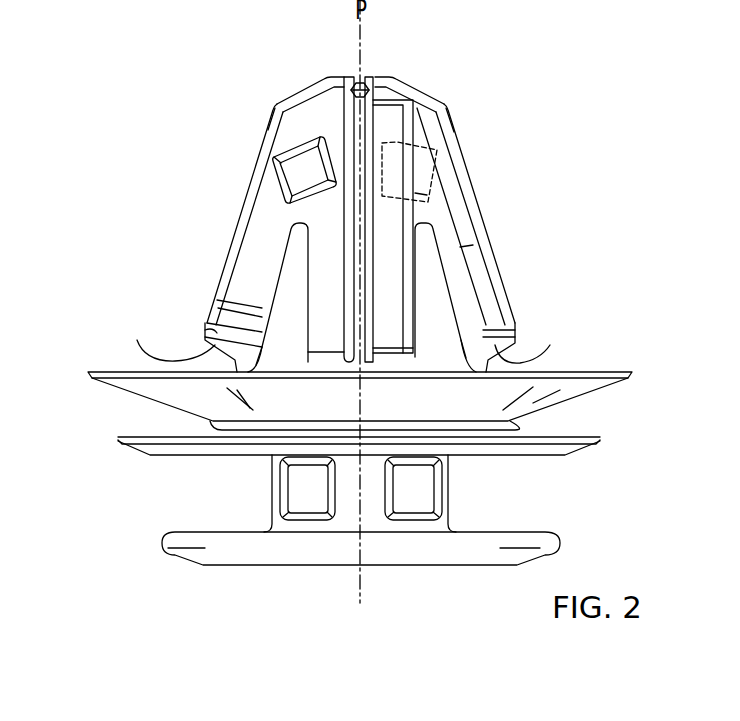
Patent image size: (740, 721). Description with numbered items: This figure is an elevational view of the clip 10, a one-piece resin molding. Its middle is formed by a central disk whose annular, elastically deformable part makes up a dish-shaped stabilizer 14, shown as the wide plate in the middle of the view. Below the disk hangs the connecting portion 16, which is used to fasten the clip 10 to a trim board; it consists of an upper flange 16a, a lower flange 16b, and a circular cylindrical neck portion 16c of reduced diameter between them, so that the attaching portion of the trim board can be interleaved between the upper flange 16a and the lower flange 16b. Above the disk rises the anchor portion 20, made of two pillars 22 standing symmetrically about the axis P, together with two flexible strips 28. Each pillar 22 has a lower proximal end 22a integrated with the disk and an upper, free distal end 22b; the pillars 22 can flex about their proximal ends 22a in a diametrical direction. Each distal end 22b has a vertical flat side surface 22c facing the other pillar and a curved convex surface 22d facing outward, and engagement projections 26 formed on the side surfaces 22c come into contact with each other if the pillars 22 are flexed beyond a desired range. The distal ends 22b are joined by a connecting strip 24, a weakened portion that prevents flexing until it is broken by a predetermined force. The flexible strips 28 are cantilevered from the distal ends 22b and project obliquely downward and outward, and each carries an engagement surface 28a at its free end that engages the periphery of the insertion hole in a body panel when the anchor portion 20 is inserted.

The clip 10 is at (152, 163).
The dish-shaped stabilizer 14 is at (600, 376).
The connecting portion 16 is at (150, 497).
The upper flange 16a is at (600, 441).
The lower flange 16b is at (325, 545).
The neck portion 16c is at (440, 490).
The anchor portion 20 is at (457, 110).
The pillars 22 is at (303, 297).
The proximal end 22a is at (207, 323).
The distal end 22b is at (332, 88).
The side surface 22c is at (322, 224).
The convex surface 22d is at (268, 128).
The connecting strip 24 is at (353, 77).
The engagement projections 26 is at (293, 178).
The flexible strips 28 is at (257, 228).
The engagement surface 28a is at (175, 361).